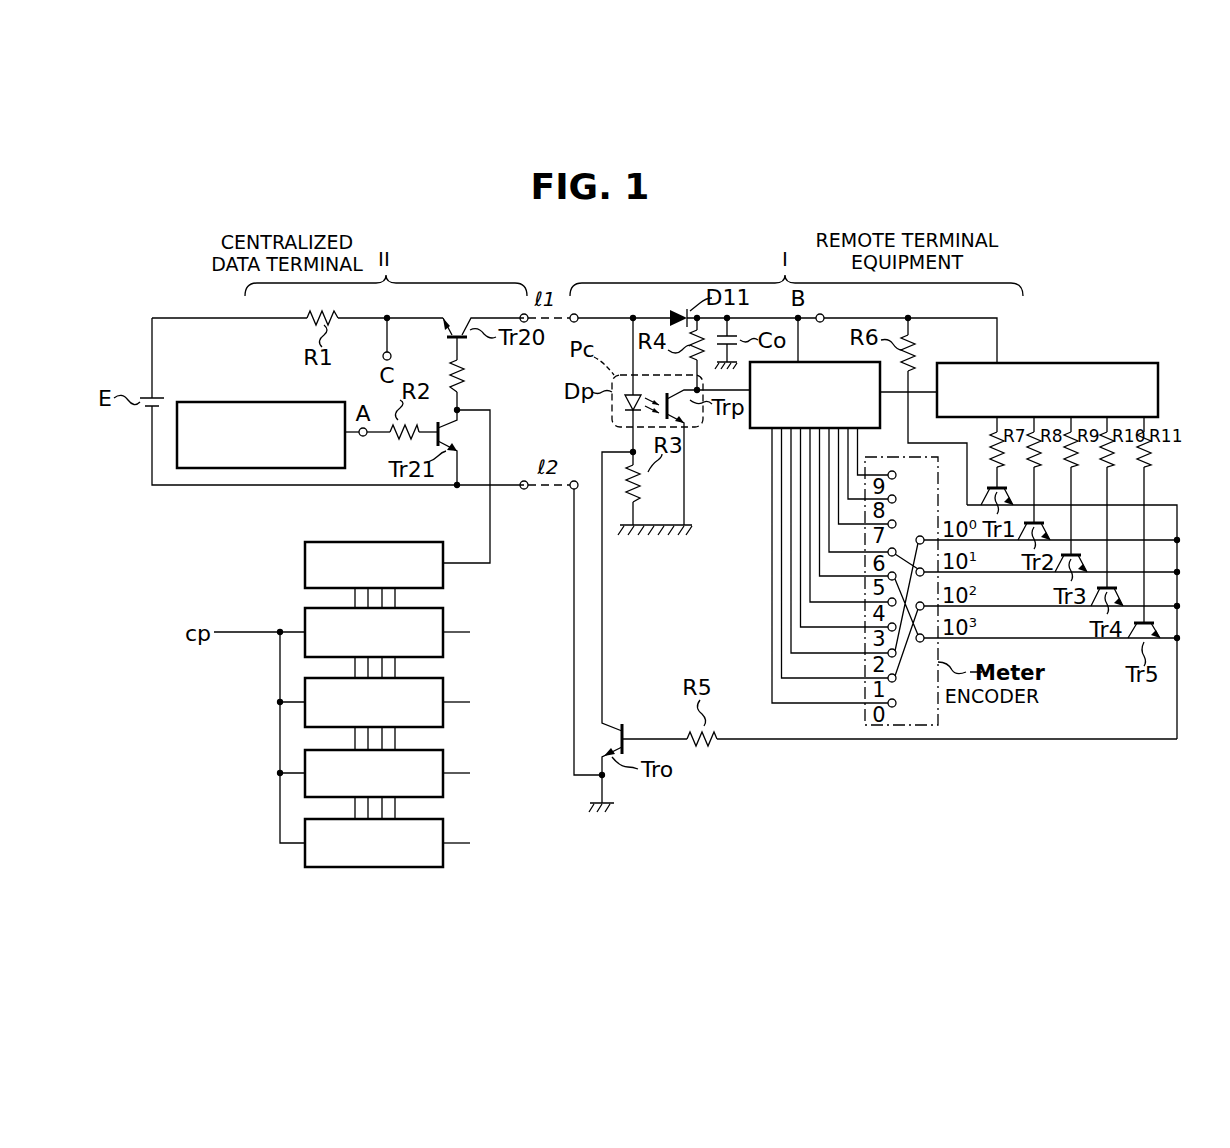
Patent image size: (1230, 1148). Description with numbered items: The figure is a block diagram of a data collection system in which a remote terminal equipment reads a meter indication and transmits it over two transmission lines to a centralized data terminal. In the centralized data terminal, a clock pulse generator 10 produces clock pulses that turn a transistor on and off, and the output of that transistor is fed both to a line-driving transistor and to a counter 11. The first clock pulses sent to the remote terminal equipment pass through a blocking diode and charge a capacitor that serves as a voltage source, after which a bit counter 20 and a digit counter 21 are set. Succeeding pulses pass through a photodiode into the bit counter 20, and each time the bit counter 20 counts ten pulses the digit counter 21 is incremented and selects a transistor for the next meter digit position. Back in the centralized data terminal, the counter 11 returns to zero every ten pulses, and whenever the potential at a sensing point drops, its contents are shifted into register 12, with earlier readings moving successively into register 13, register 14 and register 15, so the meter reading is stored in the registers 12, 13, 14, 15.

The clock pulse generator 10 is at (245, 402).
The counter 11 is at (445, 574).
The register 12 is at (445, 646).
The register 13 is at (445, 716).
The register 14 is at (445, 786).
The register 15 is at (445, 856).
The bit counter 20 is at (756, 430).
The digit counter 21 is at (1070, 360).